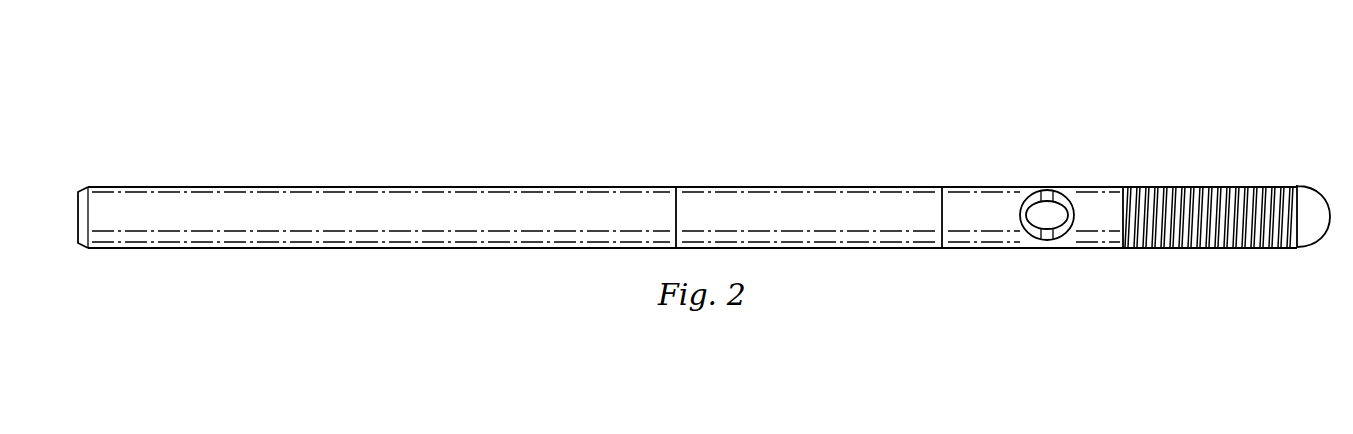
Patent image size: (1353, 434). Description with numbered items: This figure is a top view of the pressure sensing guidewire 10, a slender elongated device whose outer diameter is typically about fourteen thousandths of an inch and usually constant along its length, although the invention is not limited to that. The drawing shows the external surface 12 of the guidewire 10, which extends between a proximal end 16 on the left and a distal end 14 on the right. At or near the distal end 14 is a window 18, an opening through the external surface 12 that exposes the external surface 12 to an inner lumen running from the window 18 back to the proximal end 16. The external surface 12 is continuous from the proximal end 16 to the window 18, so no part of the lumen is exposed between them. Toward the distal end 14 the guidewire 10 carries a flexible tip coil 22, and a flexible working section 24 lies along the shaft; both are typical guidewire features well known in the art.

The pressure sensing guidewire 10 is at (515, 70).
The external surface 12 is at (408, 182).
The distal end 14 is at (1316, 177).
The proximal end 16 is at (93, 171).
The window 18 is at (1057, 215).
The flexible tip coil 22 is at (1210, 187).
The flexible working section 24 is at (785, 172).